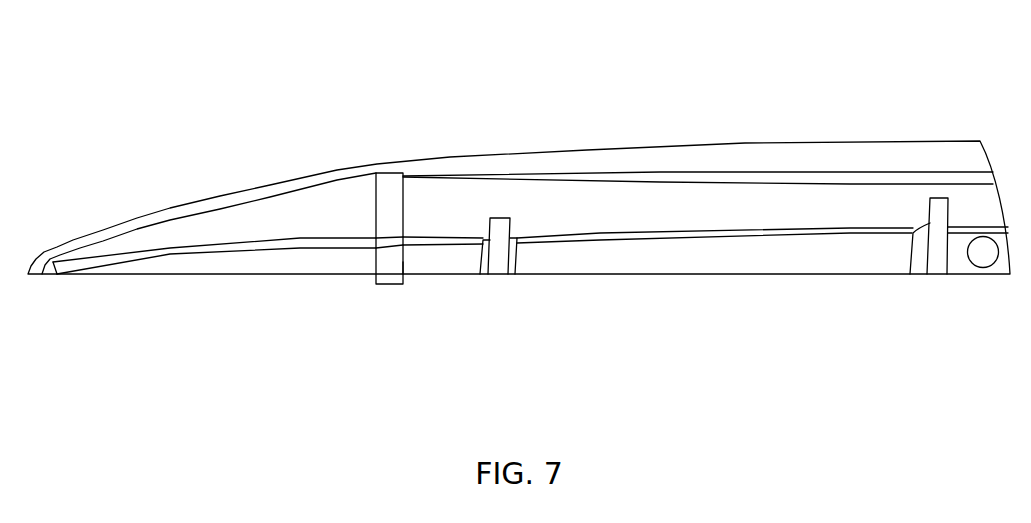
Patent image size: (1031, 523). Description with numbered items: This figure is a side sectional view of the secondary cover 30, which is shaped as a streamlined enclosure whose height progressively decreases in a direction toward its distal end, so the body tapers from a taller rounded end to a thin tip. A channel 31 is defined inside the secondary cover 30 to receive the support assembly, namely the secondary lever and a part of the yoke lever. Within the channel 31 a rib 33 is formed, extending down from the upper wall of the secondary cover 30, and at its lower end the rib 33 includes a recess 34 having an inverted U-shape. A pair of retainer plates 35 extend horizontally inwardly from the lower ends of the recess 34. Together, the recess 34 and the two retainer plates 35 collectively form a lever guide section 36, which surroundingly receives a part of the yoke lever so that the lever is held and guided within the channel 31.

The secondary cover 30 is at (745, 143).
The channel 31 is at (617, 214).
The rib 33 is at (377, 195).
The recess 34 is at (380, 262).
The retainer plates 35 is at (385, 286).
The lever guide section 36 is at (406, 261).